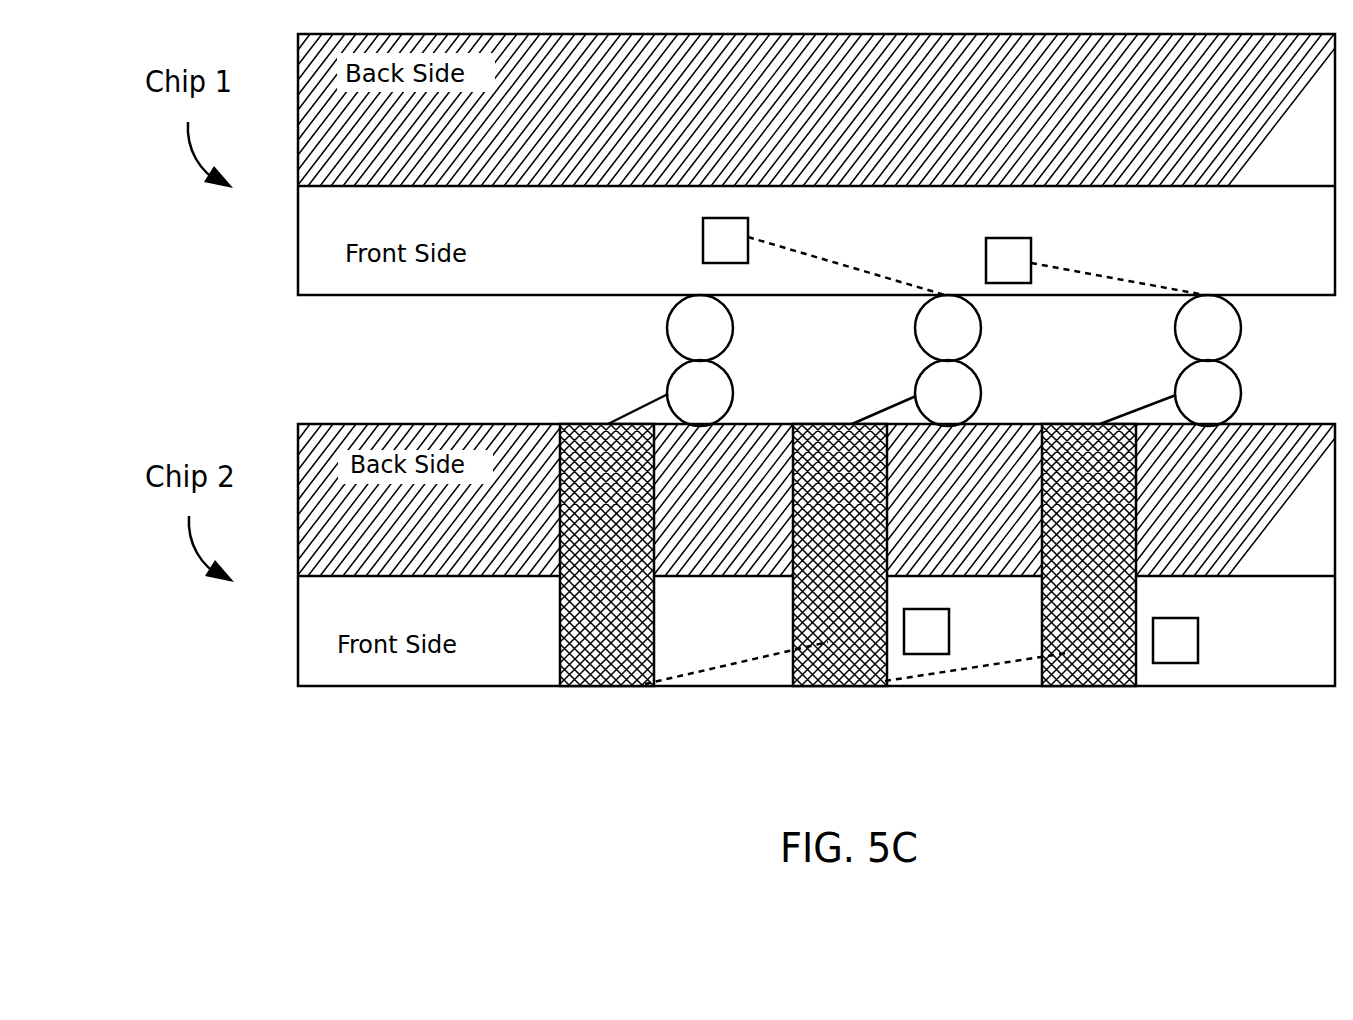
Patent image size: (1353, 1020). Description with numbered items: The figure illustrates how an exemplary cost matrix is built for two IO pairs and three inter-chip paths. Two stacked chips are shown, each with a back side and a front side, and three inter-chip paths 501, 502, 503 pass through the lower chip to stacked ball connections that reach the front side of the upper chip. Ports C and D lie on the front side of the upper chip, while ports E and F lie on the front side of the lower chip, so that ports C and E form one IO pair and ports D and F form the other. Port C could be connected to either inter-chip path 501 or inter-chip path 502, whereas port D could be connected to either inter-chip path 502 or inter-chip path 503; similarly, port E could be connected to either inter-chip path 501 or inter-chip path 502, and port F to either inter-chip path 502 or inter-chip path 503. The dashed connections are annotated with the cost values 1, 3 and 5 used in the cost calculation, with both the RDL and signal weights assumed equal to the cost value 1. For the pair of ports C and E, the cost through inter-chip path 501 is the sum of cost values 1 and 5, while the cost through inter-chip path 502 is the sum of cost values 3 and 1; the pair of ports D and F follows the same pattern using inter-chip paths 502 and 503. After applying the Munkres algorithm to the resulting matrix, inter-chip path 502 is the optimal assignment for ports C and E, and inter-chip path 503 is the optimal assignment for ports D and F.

The cost value 1 is at (924, 461).
The cost value 3 is at (976, 261).
The cost value 5 is at (856, 652).
The inter-chip path 501 is at (607, 555).
The inter-chip path 502 is at (840, 555).
The inter-chip path 503 is at (1089, 555).
The port C is at (703, 295).
The port D is at (950, 295).
The port E is at (845, 684).
The port F is at (1100, 684).